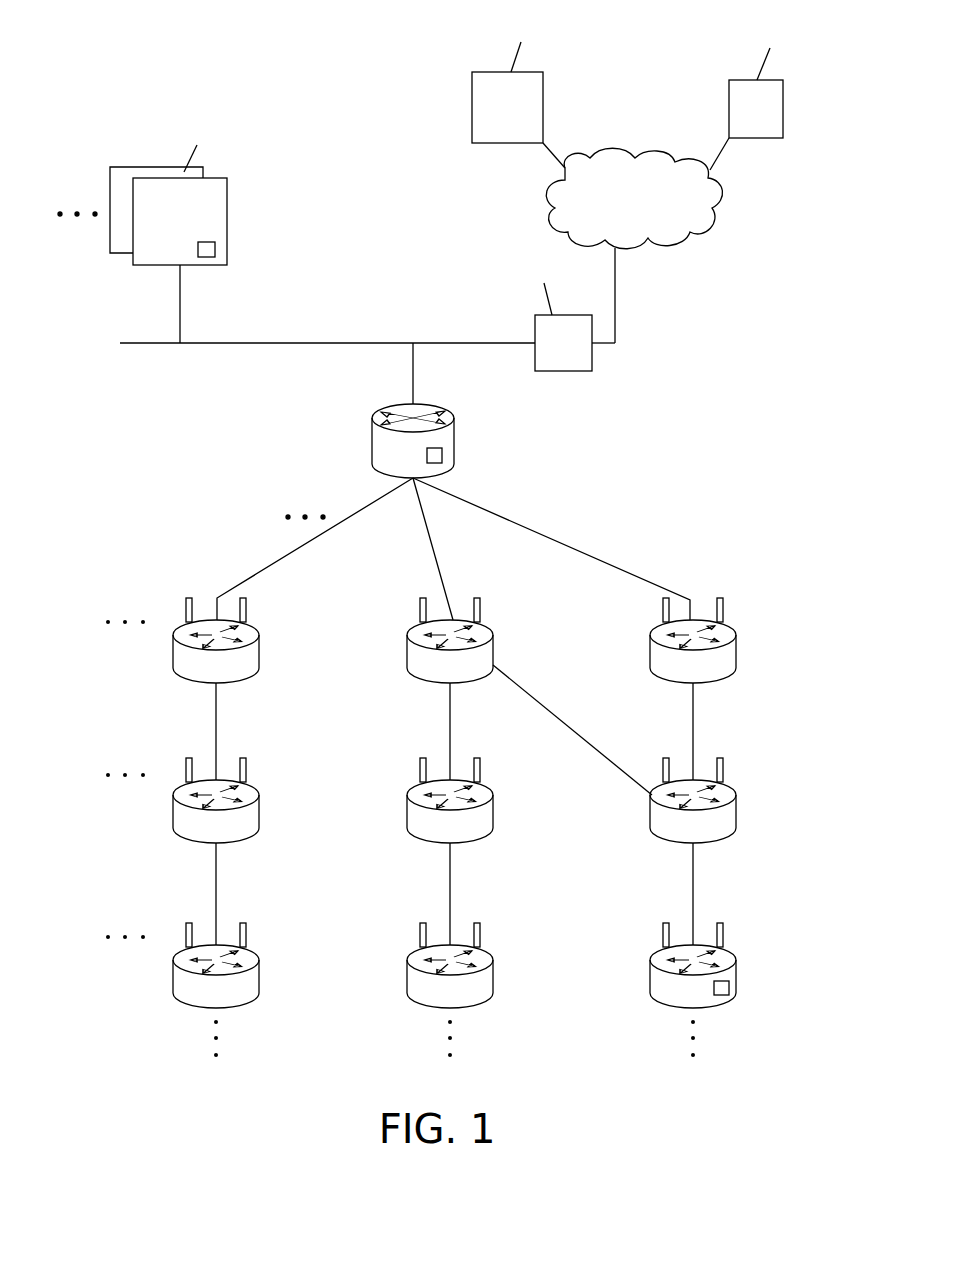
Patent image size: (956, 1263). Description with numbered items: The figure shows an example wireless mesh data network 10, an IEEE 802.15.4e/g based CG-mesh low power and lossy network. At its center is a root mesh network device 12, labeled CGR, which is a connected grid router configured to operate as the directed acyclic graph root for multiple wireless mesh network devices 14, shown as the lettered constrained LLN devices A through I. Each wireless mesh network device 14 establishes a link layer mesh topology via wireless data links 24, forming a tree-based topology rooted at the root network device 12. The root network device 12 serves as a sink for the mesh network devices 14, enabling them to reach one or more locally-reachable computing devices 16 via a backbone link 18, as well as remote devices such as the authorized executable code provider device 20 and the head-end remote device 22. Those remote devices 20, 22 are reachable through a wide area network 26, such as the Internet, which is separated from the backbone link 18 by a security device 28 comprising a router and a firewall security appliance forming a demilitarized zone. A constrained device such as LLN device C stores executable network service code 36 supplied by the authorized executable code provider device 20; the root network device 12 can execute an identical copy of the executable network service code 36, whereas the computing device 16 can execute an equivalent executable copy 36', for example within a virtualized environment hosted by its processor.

The wireless mesh data network 10 is at (588, 468).
The root mesh network device 12 is at (372, 445).
The wireless mesh network device 14 is at (174, 660).
The computing device 16 is at (172, 190).
The backbone link 18 is at (283, 343).
The authorized executable code provider device 20 is at (520, 78).
The remote device 22 is at (768, 79).
The wireless data link 24 is at (274, 562).
The wide area network 26 is at (710, 218).
The security device 28 is at (542, 312).
The executable network service code 36 is at (607, 732).
The equivalent executable copy 36' is at (235, 261).